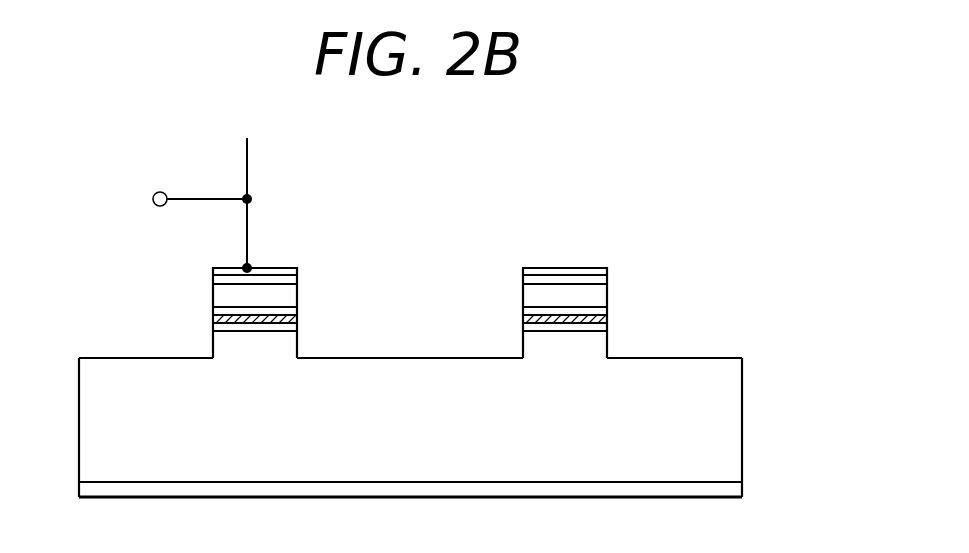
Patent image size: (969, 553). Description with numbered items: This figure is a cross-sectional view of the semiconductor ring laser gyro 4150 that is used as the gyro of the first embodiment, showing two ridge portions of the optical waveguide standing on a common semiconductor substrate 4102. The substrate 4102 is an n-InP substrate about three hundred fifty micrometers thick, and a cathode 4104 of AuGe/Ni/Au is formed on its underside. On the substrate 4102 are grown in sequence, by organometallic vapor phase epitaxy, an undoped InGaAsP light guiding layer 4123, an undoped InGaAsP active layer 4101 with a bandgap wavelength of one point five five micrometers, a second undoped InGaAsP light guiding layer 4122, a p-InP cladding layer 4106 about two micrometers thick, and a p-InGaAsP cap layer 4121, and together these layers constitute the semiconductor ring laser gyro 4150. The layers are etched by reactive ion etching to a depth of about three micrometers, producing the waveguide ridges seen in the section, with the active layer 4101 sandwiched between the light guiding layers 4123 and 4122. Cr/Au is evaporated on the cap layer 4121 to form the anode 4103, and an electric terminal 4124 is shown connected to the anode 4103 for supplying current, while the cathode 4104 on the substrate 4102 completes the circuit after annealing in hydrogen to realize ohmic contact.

The semiconductor ring laser gyro 4150 is at (560, 188).
The electric terminal 4124 is at (160, 192).
The anode 4103 is at (272, 267).
The cap layer 4121 is at (295, 280).
The cladding layer 4106 is at (293, 293).
The light guiding layer 4122 is at (232, 308).
The active layer 4101 is at (215, 318).
The light guiding layer 4123 is at (232, 332).
The semiconductor substrate 4102 is at (732, 395).
The cathode 4104 is at (730, 486).